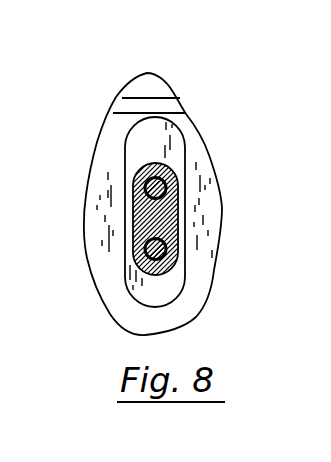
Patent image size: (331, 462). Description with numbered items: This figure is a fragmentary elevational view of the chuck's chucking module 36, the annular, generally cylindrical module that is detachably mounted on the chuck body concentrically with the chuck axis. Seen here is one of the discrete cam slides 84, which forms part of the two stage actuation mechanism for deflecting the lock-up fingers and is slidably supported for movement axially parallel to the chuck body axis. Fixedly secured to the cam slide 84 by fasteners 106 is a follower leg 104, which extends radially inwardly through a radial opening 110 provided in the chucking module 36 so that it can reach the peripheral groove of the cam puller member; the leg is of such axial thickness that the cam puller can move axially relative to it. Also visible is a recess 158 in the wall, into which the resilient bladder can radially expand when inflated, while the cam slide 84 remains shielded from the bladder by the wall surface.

The chucking module 36 is at (125, 313).
The recess 158 is at (137, 85).
The radial opening 110 is at (128, 132).
The cam slide 84 is at (146, 145).
The follower leg 104 is at (133, 217).
The fasteners 106 is at (134, 202).